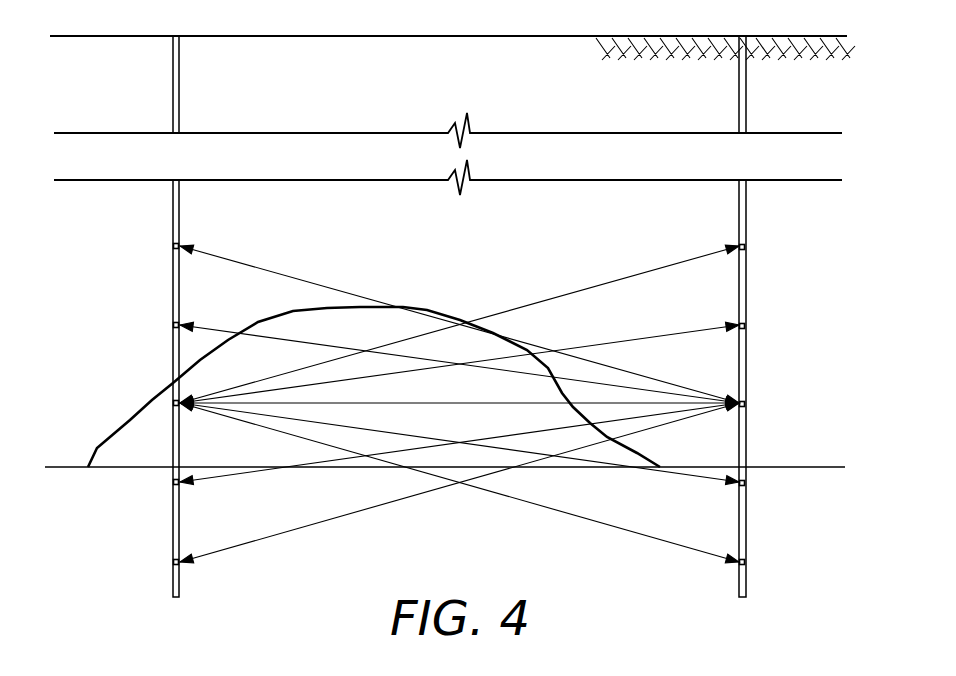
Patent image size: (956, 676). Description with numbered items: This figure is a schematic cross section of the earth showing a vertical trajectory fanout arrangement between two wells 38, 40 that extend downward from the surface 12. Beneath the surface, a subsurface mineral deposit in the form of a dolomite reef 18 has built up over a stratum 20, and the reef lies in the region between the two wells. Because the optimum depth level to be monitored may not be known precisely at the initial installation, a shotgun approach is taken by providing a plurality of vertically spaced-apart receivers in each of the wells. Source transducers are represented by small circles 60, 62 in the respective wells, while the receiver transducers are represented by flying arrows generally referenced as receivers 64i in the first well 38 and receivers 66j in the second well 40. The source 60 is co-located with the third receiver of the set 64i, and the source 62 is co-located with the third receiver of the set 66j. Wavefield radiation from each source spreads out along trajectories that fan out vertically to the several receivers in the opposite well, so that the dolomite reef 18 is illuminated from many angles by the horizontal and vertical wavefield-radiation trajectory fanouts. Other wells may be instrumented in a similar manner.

The surface 12 is at (470, 36).
The dolomite reef 18 is at (472, 286).
The stratum 20 is at (812, 467).
The well 38 is at (173, 207).
The well 40 is at (746, 208).
The source transducer 60 is at (172, 395).
The source transducer 62 is at (748, 404).
The receiver transducers 64i is at (150, 495).
The receiver transducers 66j is at (762, 498).